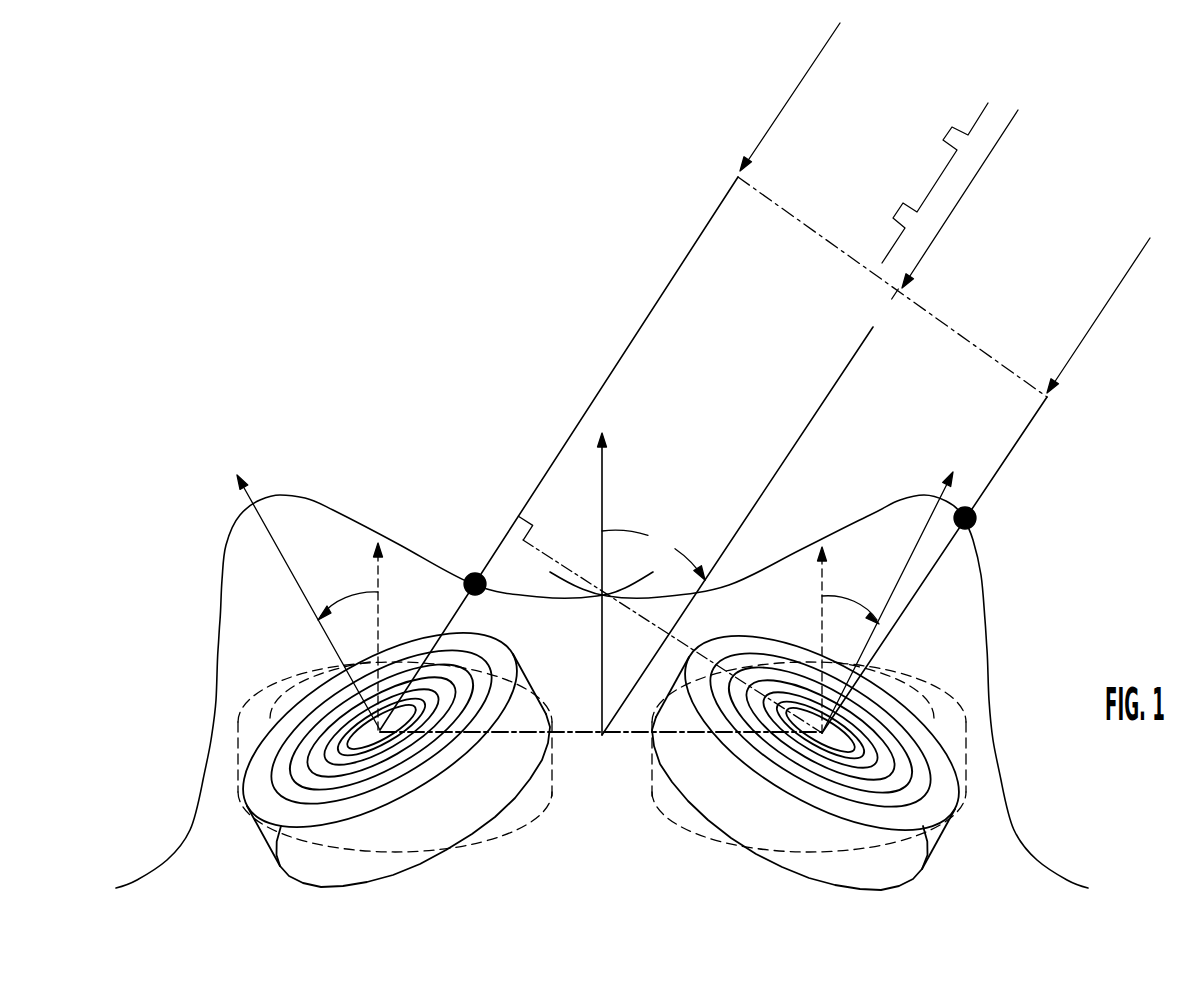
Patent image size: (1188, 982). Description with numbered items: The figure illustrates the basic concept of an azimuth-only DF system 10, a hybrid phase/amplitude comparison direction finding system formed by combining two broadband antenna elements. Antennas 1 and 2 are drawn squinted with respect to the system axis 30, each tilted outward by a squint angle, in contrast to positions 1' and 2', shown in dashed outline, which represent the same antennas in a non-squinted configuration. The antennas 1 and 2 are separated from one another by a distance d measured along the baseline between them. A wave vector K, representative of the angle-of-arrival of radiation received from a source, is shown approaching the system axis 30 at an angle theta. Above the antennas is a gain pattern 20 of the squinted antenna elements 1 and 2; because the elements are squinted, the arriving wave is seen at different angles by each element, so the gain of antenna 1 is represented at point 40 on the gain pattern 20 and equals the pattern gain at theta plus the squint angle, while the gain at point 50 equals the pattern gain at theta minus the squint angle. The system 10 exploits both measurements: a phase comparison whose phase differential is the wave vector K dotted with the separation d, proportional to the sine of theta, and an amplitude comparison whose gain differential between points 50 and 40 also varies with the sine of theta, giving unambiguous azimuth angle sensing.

The azimuth-only DF system 10 is at (263, 376).
The gain pattern 20 is at (196, 678).
The system axis 30 is at (618, 584).
The point on gain pattern 40 is at (466, 556).
The point on gain pattern 50 is at (1000, 516).
The antenna 1 is at (381, 681).
The antenna 2 is at (820, 681).
The non-squinted antenna position 1' is at (395, 781).
The non-squinted antenna position 2' is at (801, 775).
The wave vector K is at (950, 195).
The antenna separation d is at (601, 715).